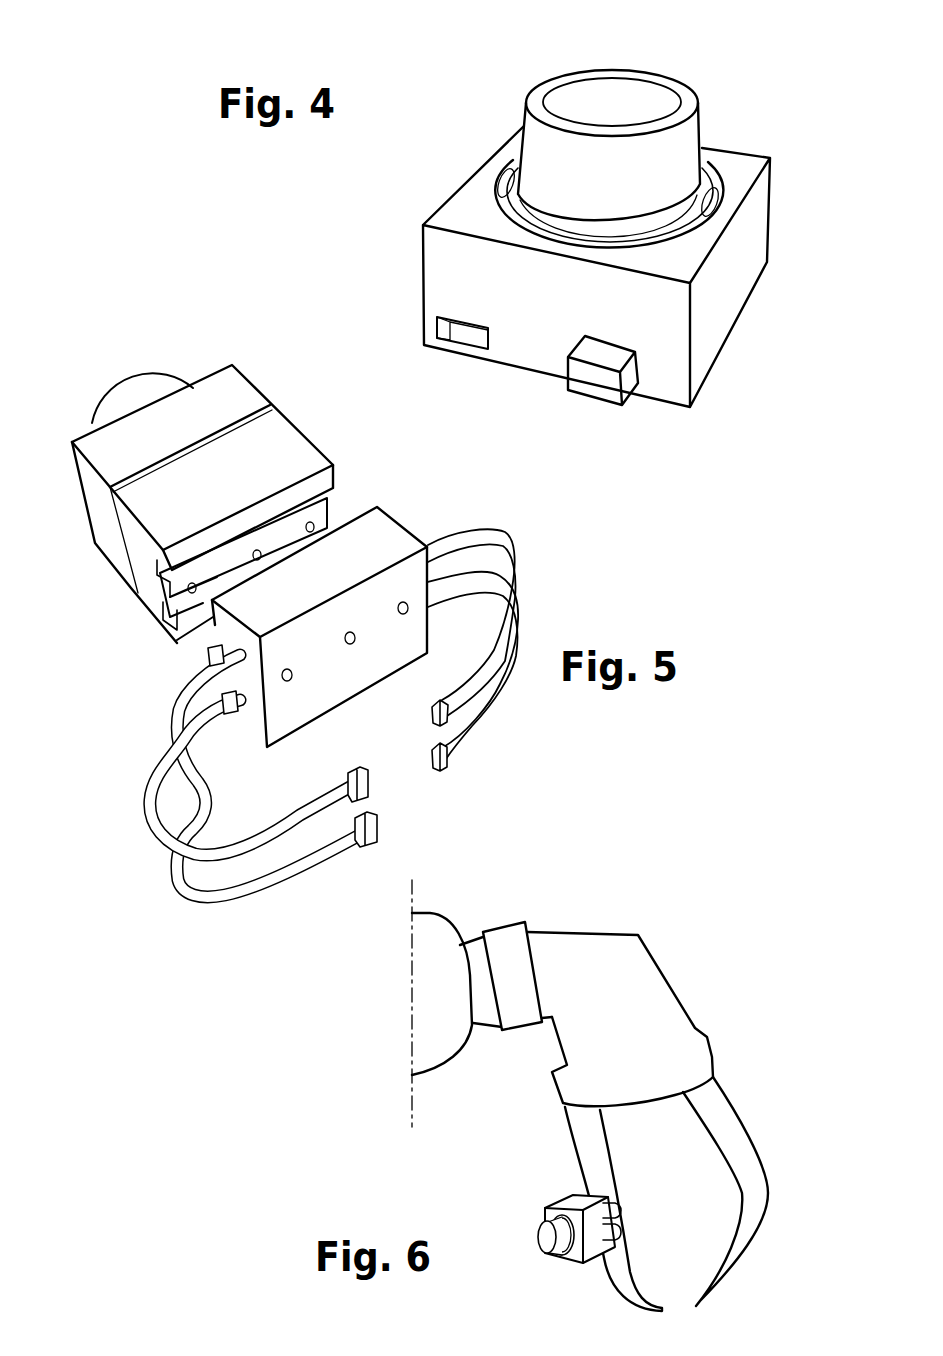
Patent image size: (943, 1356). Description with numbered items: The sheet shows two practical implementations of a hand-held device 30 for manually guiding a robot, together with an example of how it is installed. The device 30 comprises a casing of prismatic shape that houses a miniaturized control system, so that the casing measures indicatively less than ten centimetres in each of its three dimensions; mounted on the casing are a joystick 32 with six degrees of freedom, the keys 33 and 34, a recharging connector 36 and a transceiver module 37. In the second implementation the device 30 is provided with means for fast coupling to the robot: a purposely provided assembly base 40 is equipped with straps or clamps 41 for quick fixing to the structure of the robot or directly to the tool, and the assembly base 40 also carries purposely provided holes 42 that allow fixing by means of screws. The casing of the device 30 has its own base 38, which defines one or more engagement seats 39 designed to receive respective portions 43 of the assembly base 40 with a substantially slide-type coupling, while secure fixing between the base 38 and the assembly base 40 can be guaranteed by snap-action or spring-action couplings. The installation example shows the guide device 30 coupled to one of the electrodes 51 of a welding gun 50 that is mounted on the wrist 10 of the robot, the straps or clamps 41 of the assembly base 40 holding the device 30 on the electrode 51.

In FIG. 6, the wrist 10 is at (503, 923).
In FIG. 4, the device 30 is at (378, 200).
In FIG. 5, the device 30 is at (202, 346).
In FIG. 6, the device 30 is at (532, 1184).
In FIG. 4, the joystick 32 is at (670, 153).
In FIG. 5, the joystick 32 is at (122, 387).
In FIG. 4, the key 33 is at (503, 177).
In FIG. 4, the key 34 is at (710, 193).
In FIG. 4, the recharging connector 36 is at (437, 330).
In FIG. 4, the transceiver module 37 is at (590, 405).
In FIG. 5, the base 38 is at (280, 447).
In FIG. 5, the engagement seats 39 is at (207, 598).
In FIG. 5, the assembly base 40 is at (380, 513).
In FIG. 5, the straps or clamps 41 is at (455, 703).
In FIG. 5, the holes 42 is at (353, 643).
In FIG. 5, the portions 43 is at (212, 638).
In FIG. 6, the welding gun 50 is at (728, 1016).
In FIG. 6, the electrodes 51 is at (745, 1123).